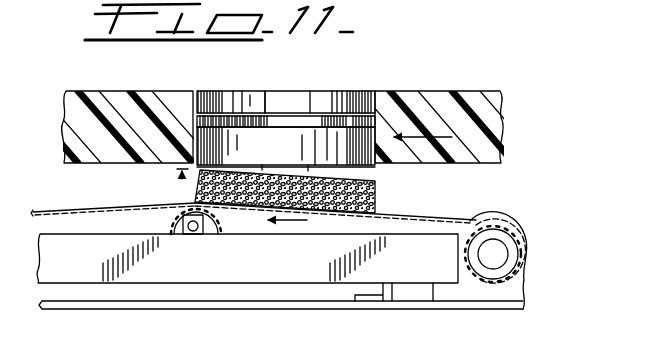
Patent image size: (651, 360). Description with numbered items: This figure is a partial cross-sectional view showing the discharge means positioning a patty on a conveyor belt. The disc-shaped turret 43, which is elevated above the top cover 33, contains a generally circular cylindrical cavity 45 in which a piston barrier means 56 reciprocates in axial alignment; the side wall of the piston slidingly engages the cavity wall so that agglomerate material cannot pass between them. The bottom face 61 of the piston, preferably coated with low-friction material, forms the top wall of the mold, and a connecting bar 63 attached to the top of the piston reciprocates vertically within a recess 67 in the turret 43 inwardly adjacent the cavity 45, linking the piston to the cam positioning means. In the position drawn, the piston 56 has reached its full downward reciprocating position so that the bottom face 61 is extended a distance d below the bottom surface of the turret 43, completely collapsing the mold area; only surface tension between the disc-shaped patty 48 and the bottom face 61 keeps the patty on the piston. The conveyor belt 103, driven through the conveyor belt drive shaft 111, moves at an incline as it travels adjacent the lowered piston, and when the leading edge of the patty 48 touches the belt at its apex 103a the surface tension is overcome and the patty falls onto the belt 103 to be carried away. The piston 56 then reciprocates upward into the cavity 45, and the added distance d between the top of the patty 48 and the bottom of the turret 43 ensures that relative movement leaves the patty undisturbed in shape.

The top cover 33 is at (158, 302).
The turret 43 is at (433, 113).
The cavity 45 is at (199, 104).
The patty 48 is at (374, 205).
The piston barrier means 56 is at (366, 145).
The bottom face 61 is at (373, 170).
The connecting bar 63 is at (314, 122).
The recess 67 is at (266, 110).
The conveyor belt 103 is at (107, 205).
The belt portion 103a is at (195, 202).
The conveyor belt drive shaft 111 is at (500, 258).
The distance d is at (182, 160).